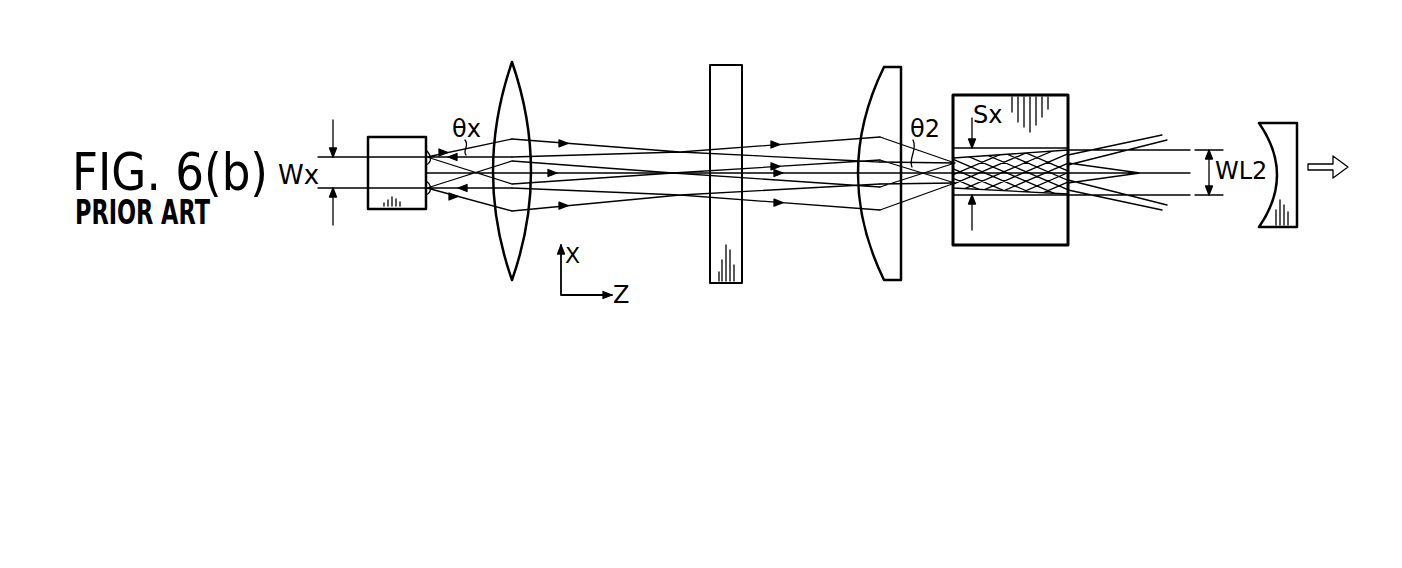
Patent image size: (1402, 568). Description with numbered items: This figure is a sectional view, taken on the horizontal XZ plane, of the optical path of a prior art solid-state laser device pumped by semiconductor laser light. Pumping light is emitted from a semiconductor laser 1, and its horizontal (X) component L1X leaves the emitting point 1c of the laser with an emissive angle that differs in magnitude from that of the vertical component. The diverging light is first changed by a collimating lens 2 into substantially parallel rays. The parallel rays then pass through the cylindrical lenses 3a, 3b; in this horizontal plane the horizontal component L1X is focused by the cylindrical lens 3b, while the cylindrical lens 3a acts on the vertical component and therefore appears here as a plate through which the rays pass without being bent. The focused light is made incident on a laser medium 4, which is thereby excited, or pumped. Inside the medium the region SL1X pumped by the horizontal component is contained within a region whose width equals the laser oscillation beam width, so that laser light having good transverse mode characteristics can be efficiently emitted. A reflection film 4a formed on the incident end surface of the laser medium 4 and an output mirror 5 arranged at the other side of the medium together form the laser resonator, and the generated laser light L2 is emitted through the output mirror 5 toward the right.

The semiconductor laser 1 is at (417, 137).
The light emitting point of laser 1c is at (430, 192).
The collimating lens 2 is at (518, 70).
The cylindrical lens 3a is at (732, 65).
The cylindrical lens 3b is at (900, 67).
The laser medium 4 is at (1073, 103).
The reflection film 4a is at (953, 232).
The output mirror 5 is at (1282, 228).
The horizontal component of pumping light L1X is at (693, 187).
The region pumped by horizontal component SL1X is at (990, 187).
The output converted beam L2 is at (1208, 173).